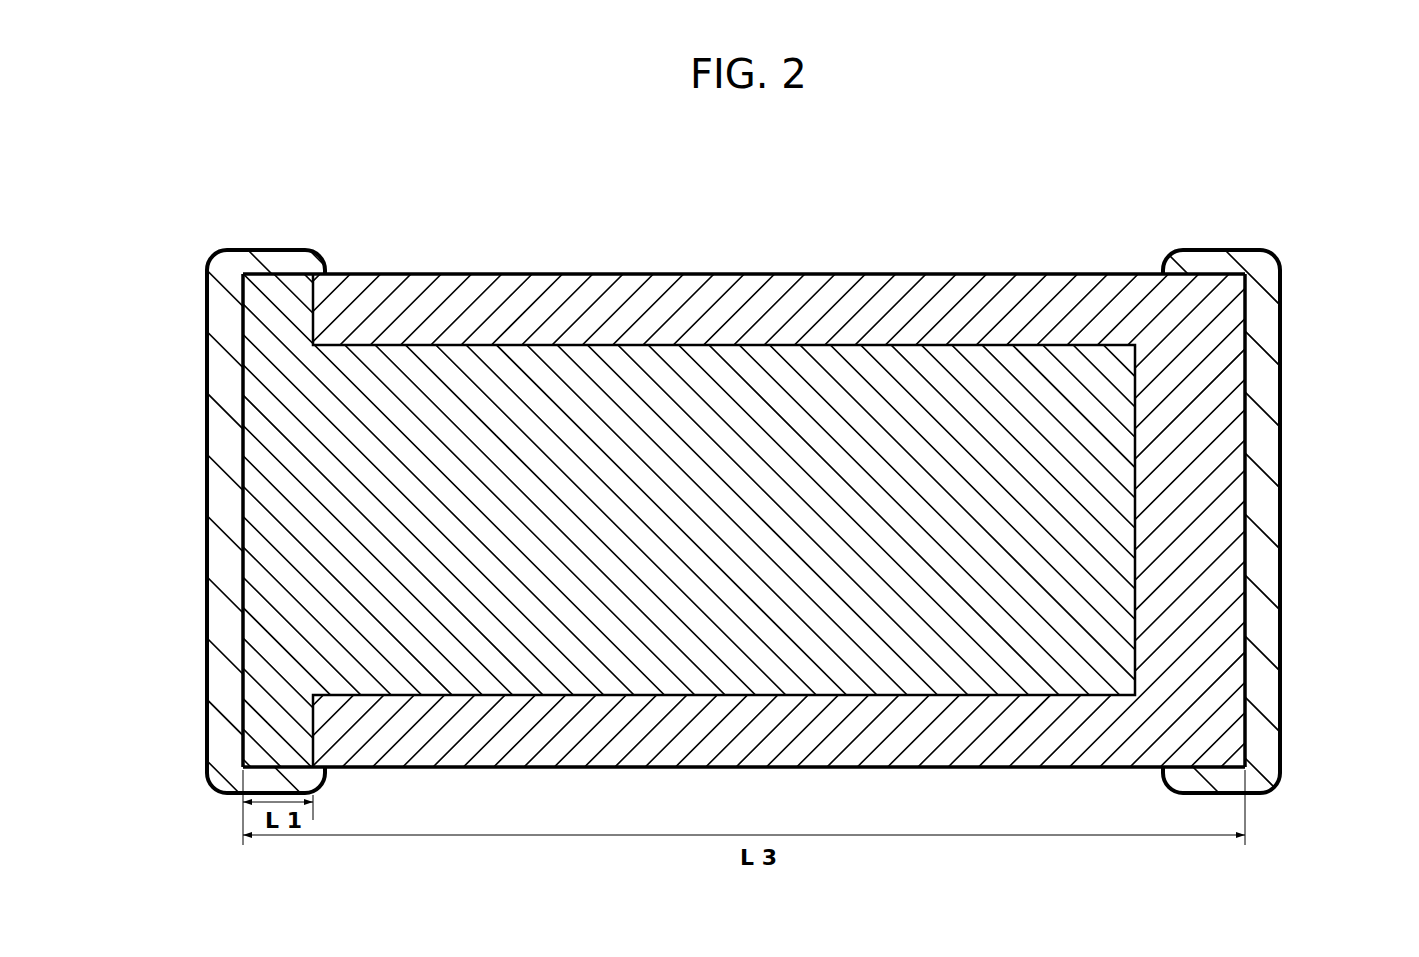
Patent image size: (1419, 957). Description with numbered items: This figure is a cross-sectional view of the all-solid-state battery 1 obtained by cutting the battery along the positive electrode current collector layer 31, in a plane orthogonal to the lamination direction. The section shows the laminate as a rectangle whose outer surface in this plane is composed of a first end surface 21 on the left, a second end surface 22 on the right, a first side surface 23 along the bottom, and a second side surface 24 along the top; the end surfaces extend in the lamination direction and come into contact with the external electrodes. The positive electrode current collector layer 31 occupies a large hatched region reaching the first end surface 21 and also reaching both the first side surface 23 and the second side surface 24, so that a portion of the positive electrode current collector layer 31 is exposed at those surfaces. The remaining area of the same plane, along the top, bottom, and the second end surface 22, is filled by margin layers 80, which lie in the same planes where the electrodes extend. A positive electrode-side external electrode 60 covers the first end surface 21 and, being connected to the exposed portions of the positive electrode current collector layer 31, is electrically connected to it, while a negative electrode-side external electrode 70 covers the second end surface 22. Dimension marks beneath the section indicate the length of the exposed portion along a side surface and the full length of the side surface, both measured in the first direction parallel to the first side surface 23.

The all-solid-state battery 1 is at (606, 248).
The first end surface 21 is at (242, 710).
The second end surface 22 is at (1245, 681).
The first side surface 23 is at (897, 770).
The second side surface 24 is at (935, 275).
The positive electrode current collector layer 31 is at (1097, 420).
The positive electrode-side external electrode 60 is at (222, 670).
The negative electrode-side external electrode 70 is at (1263, 622).
The margin layer 80 is at (810, 292).